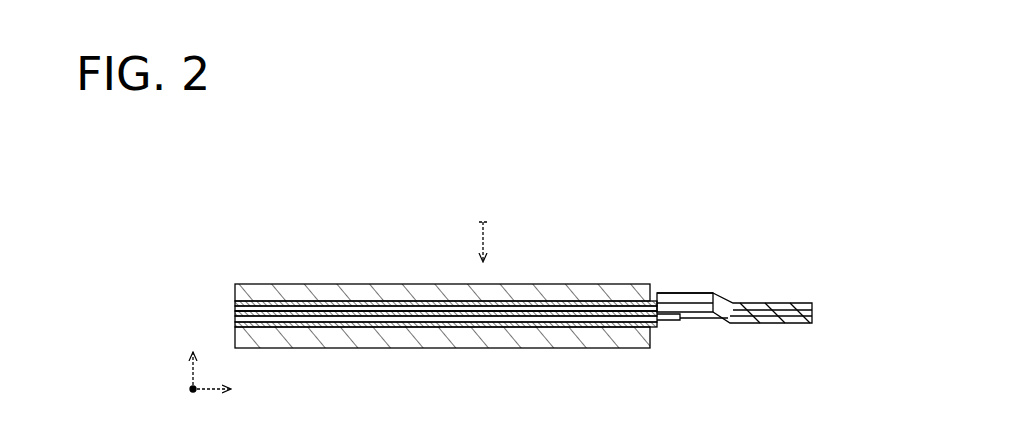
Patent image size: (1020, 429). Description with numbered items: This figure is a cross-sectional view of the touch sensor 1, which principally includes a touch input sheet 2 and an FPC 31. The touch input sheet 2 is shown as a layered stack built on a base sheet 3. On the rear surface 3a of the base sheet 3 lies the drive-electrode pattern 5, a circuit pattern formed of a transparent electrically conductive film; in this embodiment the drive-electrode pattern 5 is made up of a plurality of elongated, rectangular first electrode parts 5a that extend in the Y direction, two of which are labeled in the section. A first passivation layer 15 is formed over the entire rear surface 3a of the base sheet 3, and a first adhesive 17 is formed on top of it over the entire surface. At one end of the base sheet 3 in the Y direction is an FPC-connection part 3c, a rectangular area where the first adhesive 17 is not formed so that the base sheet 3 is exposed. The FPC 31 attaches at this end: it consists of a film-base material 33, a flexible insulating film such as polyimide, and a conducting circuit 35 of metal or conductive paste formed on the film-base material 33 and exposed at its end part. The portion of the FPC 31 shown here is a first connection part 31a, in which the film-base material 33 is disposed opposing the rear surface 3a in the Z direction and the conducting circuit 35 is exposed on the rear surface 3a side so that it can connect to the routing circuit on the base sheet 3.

The touch sensor 1 is at (640, 206).
The touch input sheet 2 is at (437, 256).
The base sheet 3 is at (420, 312).
The rear surface 3a is at (520, 302).
The FPC-connection part 3c is at (684, 321).
The drive-electrode pattern 5 is at (375, 219).
The first electrode part 5a is at (290, 284).
The first passivation layer 15 is at (627, 306).
The first adhesive 17 is at (548, 301).
The FPC 31 is at (760, 271).
The first connection part 31a is at (690, 289).
The film-base material 33 is at (672, 293).
The conducting circuit 35 is at (700, 323).